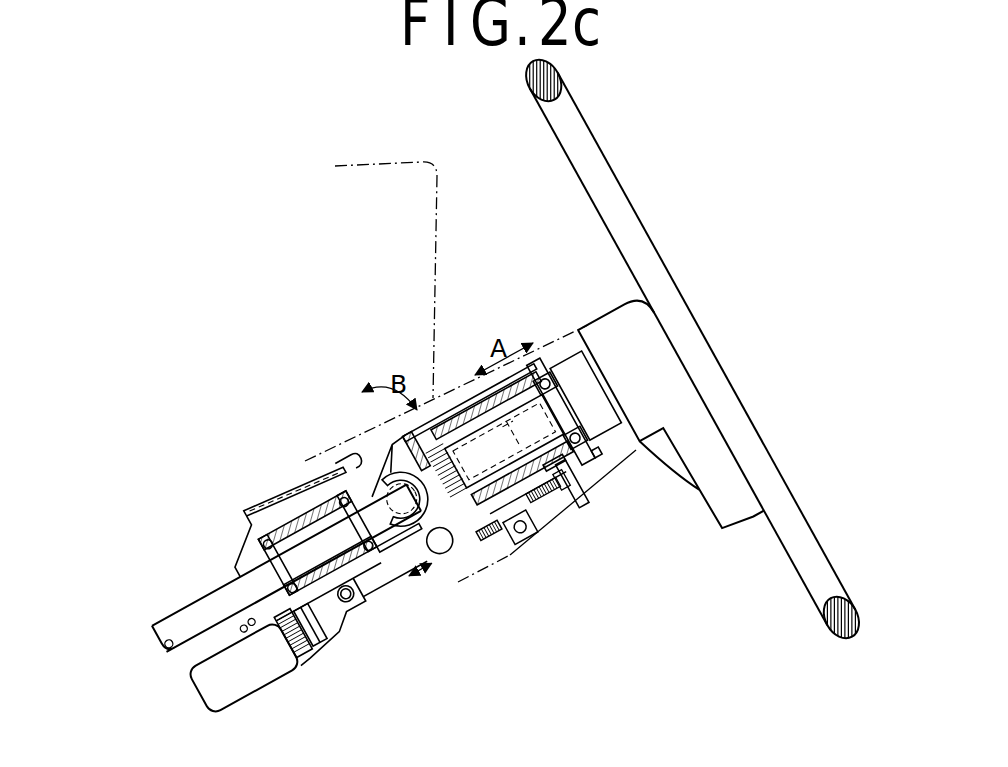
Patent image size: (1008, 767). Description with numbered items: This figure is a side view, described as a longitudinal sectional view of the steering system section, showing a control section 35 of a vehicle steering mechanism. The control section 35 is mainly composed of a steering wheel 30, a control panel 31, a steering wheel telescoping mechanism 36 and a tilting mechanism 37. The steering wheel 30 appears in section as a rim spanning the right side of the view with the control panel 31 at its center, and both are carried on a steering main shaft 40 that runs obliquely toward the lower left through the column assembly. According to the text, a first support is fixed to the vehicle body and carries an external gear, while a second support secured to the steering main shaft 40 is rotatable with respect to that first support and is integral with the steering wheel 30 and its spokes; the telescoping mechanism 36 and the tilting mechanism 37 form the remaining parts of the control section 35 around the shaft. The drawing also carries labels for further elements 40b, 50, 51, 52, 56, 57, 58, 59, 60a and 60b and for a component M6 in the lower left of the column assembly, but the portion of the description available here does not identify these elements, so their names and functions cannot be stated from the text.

The steering wheel 30 is at (638, 236).
The control panel 31 is at (676, 386).
The control section 35 is at (270, 362).
The steering wheel telescoping mechanism 36 is at (546, 541).
The tilting mechanism 37 is at (377, 628).
The steering main shaft 40 is at (576, 386).
The lower steering shaft 40b is at (196, 609).
The column housing 50 is at (437, 411).
The support plate 51 is at (590, 462).
The bolt 52 is at (548, 506).
The lever hook 56 is at (362, 486).
The worm gear 57 is at (380, 594).
The gear 58 is at (340, 614).
The gear 59 is at (320, 641).
The pin 60a is at (405, 582).
The bracket 60b is at (581, 508).
The motor M6 is at (265, 670).